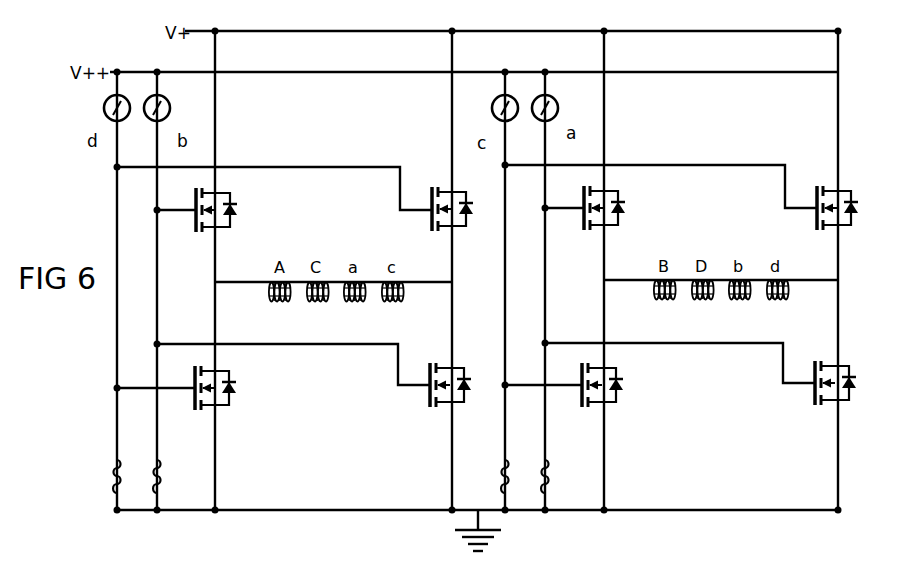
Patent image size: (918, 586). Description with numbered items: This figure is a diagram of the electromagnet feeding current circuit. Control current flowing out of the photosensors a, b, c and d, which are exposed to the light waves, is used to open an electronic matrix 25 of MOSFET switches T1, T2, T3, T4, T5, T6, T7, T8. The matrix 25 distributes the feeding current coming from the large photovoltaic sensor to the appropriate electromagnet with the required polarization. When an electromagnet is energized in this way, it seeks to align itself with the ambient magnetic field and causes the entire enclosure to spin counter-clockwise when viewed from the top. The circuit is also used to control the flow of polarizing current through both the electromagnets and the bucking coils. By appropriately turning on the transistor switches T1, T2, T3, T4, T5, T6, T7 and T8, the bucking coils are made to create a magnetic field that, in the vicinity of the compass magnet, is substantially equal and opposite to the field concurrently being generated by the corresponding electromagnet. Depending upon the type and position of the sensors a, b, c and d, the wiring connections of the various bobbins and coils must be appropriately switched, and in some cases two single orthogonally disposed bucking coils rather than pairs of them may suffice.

The electronic matrix 25 is at (97, 451).
The MOSFET switch T1 is at (231, 210).
The MOSFET switch T2 is at (231, 388).
The MOSFET switch T3 is at (435, 213).
The MOSFET switch T4 is at (433, 390).
The MOSFET switch T5 is at (608, 219).
The MOSFET switch T6 is at (607, 401).
The MOSFET switch T7 is at (842, 219).
The MOSFET switch T8 is at (840, 396).